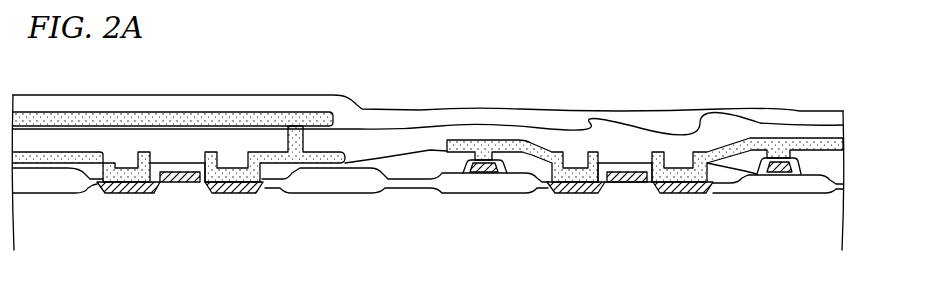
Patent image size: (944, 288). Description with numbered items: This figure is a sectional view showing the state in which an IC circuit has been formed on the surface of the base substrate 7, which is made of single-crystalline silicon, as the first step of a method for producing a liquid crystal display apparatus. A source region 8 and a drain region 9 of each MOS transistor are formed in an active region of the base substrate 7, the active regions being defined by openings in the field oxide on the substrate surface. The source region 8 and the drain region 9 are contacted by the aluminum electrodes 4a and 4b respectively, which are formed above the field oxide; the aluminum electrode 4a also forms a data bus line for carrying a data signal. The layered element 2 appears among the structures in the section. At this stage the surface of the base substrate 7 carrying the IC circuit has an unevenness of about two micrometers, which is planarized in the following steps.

The semiconductor layer 2 is at (488, 180).
The aluminum electrode 4a is at (275, 118).
The aluminum electrode 4b is at (100, 157).
The base substrate 7 is at (823, 210).
The source region 8 is at (120, 196).
The drain region 9 is at (233, 196).